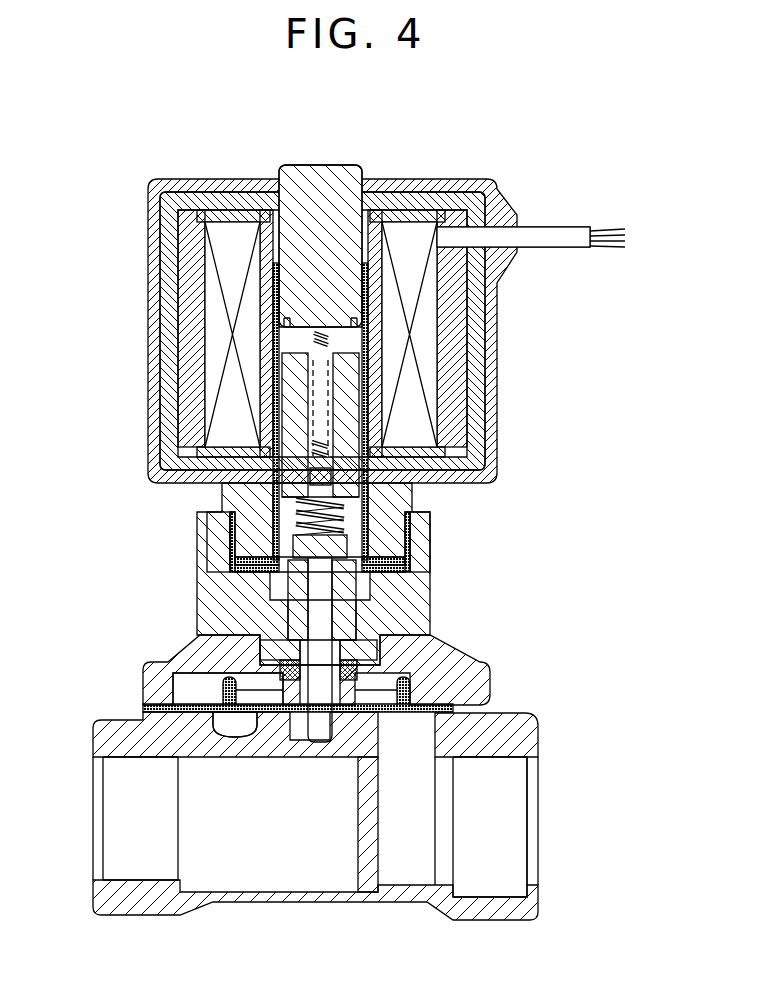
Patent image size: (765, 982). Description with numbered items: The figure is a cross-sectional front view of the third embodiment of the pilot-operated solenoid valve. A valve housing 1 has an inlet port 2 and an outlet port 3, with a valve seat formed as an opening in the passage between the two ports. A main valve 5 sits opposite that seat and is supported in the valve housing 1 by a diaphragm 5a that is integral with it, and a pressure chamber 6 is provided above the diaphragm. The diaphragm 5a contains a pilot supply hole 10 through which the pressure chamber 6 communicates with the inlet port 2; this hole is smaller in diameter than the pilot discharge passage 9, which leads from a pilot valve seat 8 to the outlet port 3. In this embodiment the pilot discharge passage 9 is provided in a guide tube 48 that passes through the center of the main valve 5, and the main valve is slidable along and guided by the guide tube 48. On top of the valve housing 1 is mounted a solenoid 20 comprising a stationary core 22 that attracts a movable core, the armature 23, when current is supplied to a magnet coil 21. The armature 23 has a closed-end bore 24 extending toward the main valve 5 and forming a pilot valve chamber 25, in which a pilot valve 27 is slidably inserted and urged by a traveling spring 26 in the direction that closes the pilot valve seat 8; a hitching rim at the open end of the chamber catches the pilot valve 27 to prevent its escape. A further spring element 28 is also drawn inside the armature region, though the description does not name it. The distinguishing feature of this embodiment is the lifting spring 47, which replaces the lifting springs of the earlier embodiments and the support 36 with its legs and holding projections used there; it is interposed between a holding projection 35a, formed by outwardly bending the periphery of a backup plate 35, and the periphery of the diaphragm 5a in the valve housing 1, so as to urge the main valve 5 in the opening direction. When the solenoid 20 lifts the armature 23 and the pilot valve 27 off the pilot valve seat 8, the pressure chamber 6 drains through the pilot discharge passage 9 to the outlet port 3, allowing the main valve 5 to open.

The valve housing 1 is at (373, 912).
The inlet port 2 is at (513, 826).
The outlet port 3 is at (118, 810).
The main valve 5 is at (336, 715).
The diaphragm 5a is at (221, 708).
The pressure chamber 6 is at (203, 675).
The pilot valve seat 8 is at (233, 556).
The pilot discharge passage 9 is at (415, 602).
The pilot supply hole 10 is at (410, 715).
The solenoid 20 is at (443, 178).
The magnet coil 21 is at (430, 343).
The stationary core 22 is at (329, 168).
The armature 23 is at (352, 425).
The closed-end bore 24 is at (352, 547).
The pilot valve chamber 25 is at (348, 570).
The traveling spring 26 is at (332, 519).
The pilot valve 27 is at (268, 552).
The spring 28 is at (308, 466).
The backup plate 35 is at (420, 655).
The holding projection 35a is at (462, 681).
The support 36 is at (278, 712).
The lifting spring 47 is at (182, 682).
The guide tube 48 is at (306, 740).